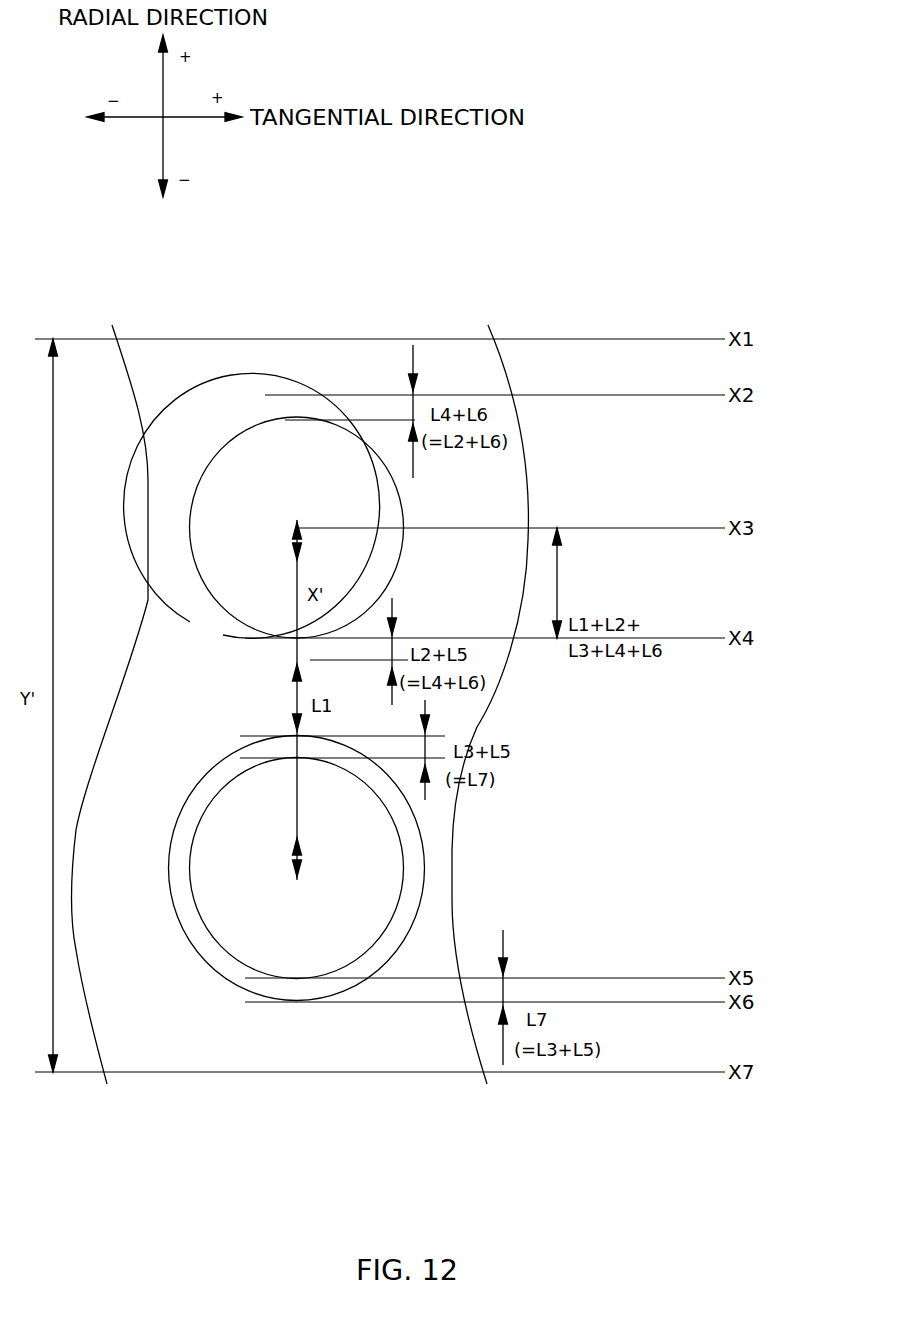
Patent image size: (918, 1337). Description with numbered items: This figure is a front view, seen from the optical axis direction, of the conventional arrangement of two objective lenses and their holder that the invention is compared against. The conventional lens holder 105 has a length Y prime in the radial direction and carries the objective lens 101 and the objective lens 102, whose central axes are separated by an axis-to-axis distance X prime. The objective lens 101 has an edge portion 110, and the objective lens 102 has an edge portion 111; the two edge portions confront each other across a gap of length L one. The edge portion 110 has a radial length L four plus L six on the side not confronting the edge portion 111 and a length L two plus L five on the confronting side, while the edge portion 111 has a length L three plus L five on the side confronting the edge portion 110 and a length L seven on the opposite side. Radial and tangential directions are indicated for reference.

The objective lens 101 is at (190, 622).
The objective lens 102 is at (172, 847).
The edge portion 110 is at (224, 632).
The edge portion 111 is at (213, 796).
The lens holder 105 is at (295, 1058).